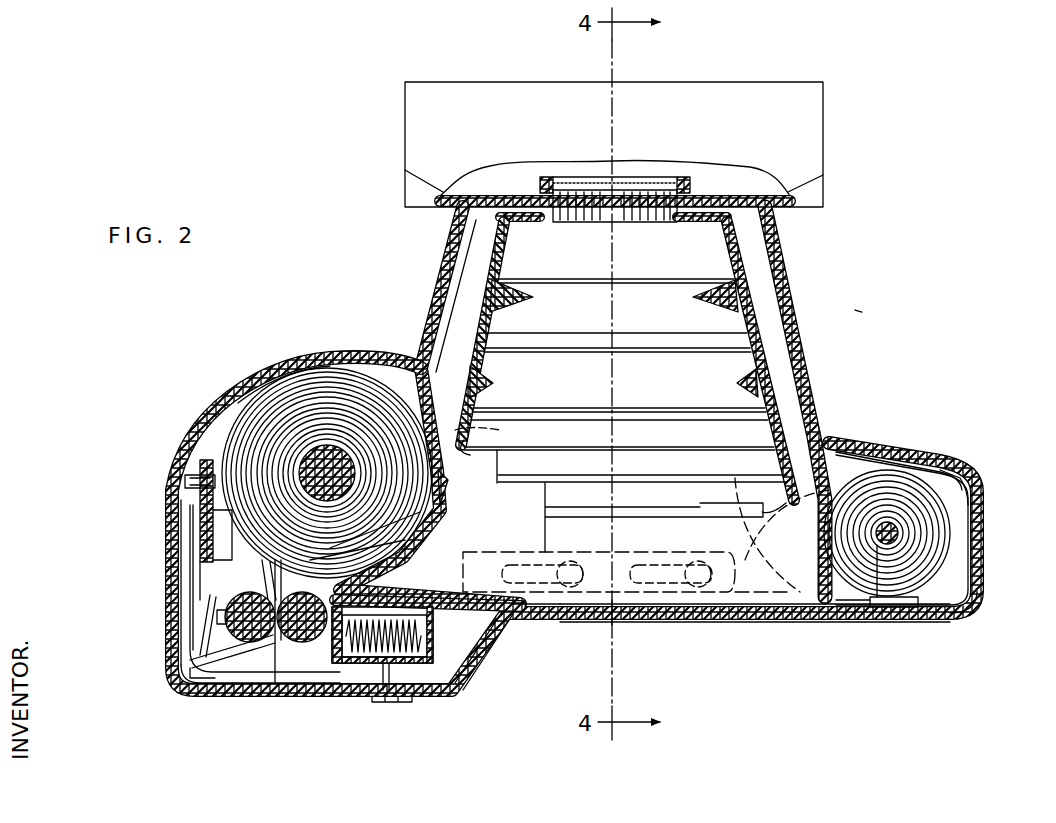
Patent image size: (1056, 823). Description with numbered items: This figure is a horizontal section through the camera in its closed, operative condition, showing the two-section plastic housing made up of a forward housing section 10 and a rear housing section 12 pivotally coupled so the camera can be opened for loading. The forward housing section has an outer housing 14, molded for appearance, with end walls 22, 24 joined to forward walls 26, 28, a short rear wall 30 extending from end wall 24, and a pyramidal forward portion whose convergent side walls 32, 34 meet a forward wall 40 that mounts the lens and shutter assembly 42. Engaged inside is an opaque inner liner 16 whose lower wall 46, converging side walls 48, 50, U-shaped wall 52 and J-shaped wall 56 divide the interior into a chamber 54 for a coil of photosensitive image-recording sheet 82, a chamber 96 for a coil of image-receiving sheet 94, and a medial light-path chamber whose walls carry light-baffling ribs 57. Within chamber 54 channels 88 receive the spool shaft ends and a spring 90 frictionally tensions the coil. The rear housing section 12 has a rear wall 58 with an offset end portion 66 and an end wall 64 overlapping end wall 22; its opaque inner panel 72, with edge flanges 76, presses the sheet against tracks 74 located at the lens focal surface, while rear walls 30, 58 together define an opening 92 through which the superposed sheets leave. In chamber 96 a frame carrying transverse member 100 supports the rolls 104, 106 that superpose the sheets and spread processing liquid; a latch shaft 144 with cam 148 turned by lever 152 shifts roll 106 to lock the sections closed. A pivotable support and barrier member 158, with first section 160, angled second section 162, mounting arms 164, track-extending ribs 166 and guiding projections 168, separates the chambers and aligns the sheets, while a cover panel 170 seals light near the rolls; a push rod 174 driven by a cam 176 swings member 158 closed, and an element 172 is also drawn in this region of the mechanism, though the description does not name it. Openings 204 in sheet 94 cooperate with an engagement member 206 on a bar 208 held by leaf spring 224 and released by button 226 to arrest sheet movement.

The forward housing section 10 is at (852, 312).
The rear housing section 12 is at (733, 650).
The outer housing 14 is at (452, 236).
The inner liner 16 is at (470, 312).
The end wall 22 is at (982, 505).
The end wall 24 is at (165, 522).
The forward wall 26 is at (912, 455).
The forward wall 28 is at (400, 360).
The rear wall 30 is at (184, 698).
The side wall 32 is at (793, 286).
The side wall 34 is at (447, 268).
The forward wall 40 is at (490, 186).
The lens and shutter assembly 42 is at (708, 73).
The lower wall 46 is at (585, 331).
The side wall 48 is at (760, 312).
The side wall 50 is at (457, 338).
The U-shaped wall 52 is at (851, 455).
The chamber 54 is at (940, 578).
The J-shaped wall 56 is at (206, 430).
The ribs 57 is at (760, 258).
The rear wall 58 is at (702, 622).
The end wall 64 is at (980, 598).
The end portion 66 is at (320, 695).
The inner panel 72 is at (572, 624).
The tracks 74 is at (838, 624).
The flanges 76 is at (449, 668).
The photosensitive image-recording sheet 82 is at (468, 650).
The channels 88 is at (900, 545).
The spring 90 is at (885, 610).
The opening 92 is at (287, 662).
The image-receiving sheet 94 is at (290, 405).
The chamber 96 is at (205, 452).
The transverse member 100 is at (195, 575).
The roll 104 is at (225, 643).
The roll 106 is at (279, 650).
The shaft 144 is at (386, 692).
The cam 148 is at (375, 666).
The lever 152 is at (410, 702).
The support and barrier member 158 is at (464, 557).
The first section 160 is at (420, 512).
The second section 162 is at (405, 540).
The dependent arms 164 is at (500, 430).
The ribs 166 is at (492, 620).
The projections 168 is at (432, 493).
The cover panel 170 is at (190, 536).
The arm 172 is at (222, 598).
The push rod 174 is at (606, 623).
The cam 176 is at (769, 524).
The openings 204 is at (225, 622).
The engagement member 206 is at (215, 612).
The bar 208 is at (200, 665).
The leaf spring 224 is at (196, 562).
The button 226 is at (225, 690).